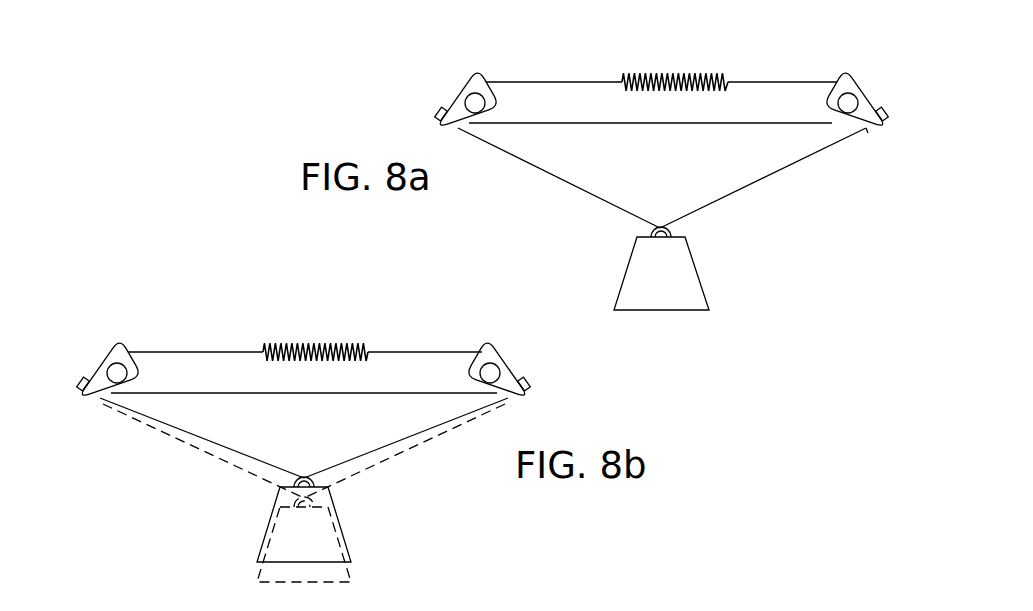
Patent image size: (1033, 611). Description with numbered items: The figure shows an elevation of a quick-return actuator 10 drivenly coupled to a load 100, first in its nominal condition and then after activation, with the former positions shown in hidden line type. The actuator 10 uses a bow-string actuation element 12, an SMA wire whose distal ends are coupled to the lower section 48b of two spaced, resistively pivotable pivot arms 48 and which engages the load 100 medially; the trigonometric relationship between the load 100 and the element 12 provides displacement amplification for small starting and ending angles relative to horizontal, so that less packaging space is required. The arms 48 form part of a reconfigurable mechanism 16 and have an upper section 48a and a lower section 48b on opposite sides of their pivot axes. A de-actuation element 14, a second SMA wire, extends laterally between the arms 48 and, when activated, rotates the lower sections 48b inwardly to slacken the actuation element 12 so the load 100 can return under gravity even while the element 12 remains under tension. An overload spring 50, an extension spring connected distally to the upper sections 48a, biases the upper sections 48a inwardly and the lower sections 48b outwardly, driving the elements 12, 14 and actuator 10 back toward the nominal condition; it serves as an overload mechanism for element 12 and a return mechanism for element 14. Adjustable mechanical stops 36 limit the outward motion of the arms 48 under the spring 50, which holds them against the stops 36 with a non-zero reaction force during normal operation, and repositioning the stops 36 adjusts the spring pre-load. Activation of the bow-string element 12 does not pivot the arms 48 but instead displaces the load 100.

In FIG. 8a, the actuator 10 is at (356, 106).
In FIG. 8a, the bow-string actuation element 12 is at (574, 188).
In FIG. 8b, the bow-string actuation element 12 is at (228, 450).
In FIG. 8a, the de-actuation element 14 is at (567, 125).
In FIG. 8b, the reconfigurable mechanism 16 is at (96, 349).
In FIG. 8a, the adjustable mechanical stops 36 is at (432, 112).
In FIG. 8a, the pivot arms 48 is at (845, 123).
In FIG. 8a, the upper section 48a is at (860, 90).
In FIG. 8a, the lower section 48b is at (875, 134).
In FIG. 8a, the overload spring 50 is at (553, 82).
In FIG. 8a, the load 100 is at (622, 268).